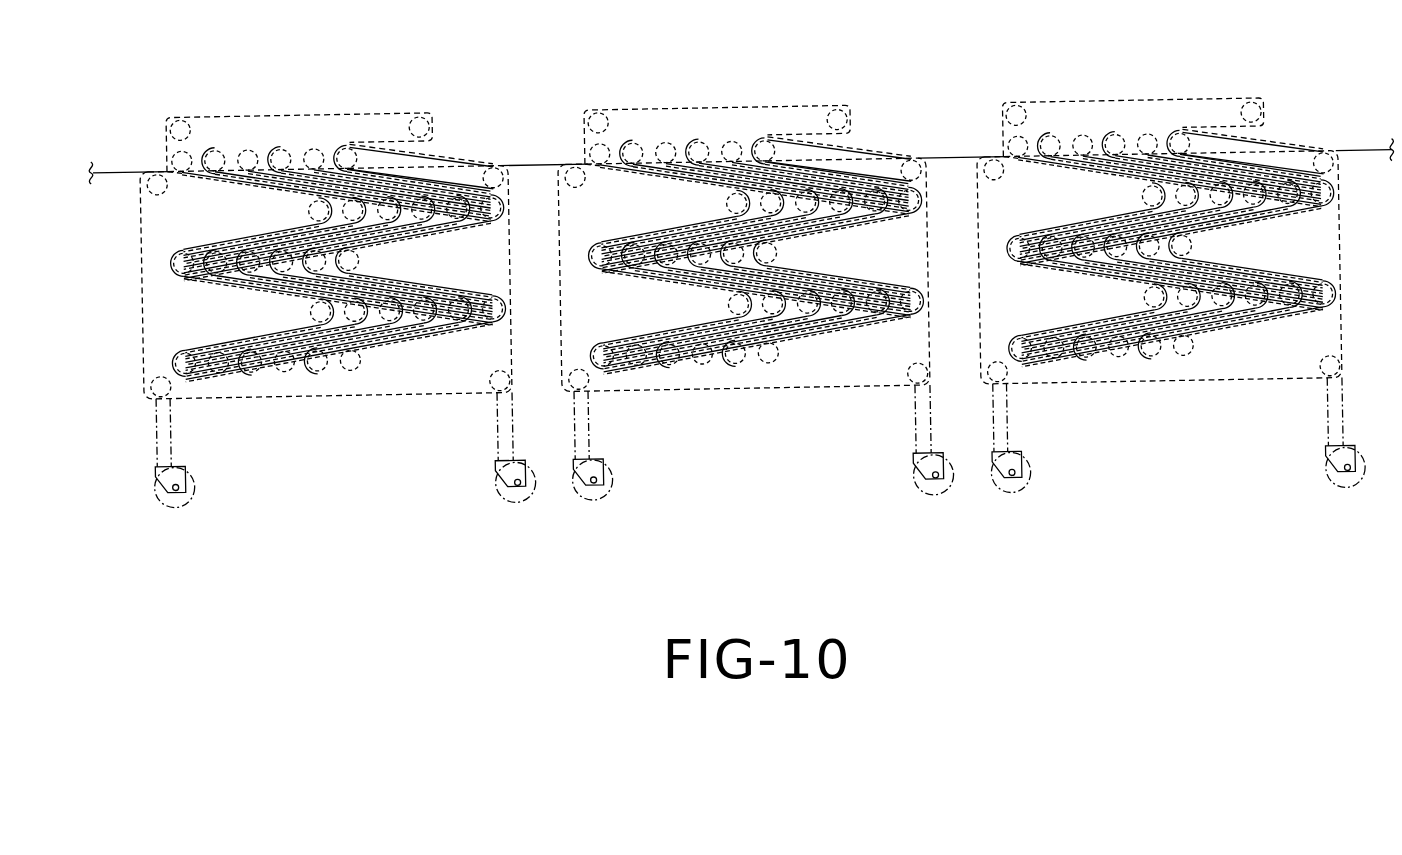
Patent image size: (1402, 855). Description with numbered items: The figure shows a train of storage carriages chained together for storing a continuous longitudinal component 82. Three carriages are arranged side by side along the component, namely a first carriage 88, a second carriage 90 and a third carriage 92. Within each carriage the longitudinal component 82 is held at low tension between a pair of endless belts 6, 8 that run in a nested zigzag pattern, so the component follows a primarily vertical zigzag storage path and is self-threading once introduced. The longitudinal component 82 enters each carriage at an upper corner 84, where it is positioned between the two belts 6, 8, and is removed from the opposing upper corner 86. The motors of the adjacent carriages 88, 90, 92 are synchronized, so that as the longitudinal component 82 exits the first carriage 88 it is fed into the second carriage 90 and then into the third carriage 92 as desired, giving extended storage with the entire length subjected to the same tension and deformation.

The endless belt 6 is at (276, 117).
The endless belt 8 is at (366, 395).
The longitudinal component 82 is at (118, 176).
The upper corner 84 is at (160, 160).
The opposing upper corner 86 is at (425, 147).
The first carriage 88 is at (336, 267).
The second carriage 90 is at (707, 412).
The third carriage 92 is at (1124, 410).